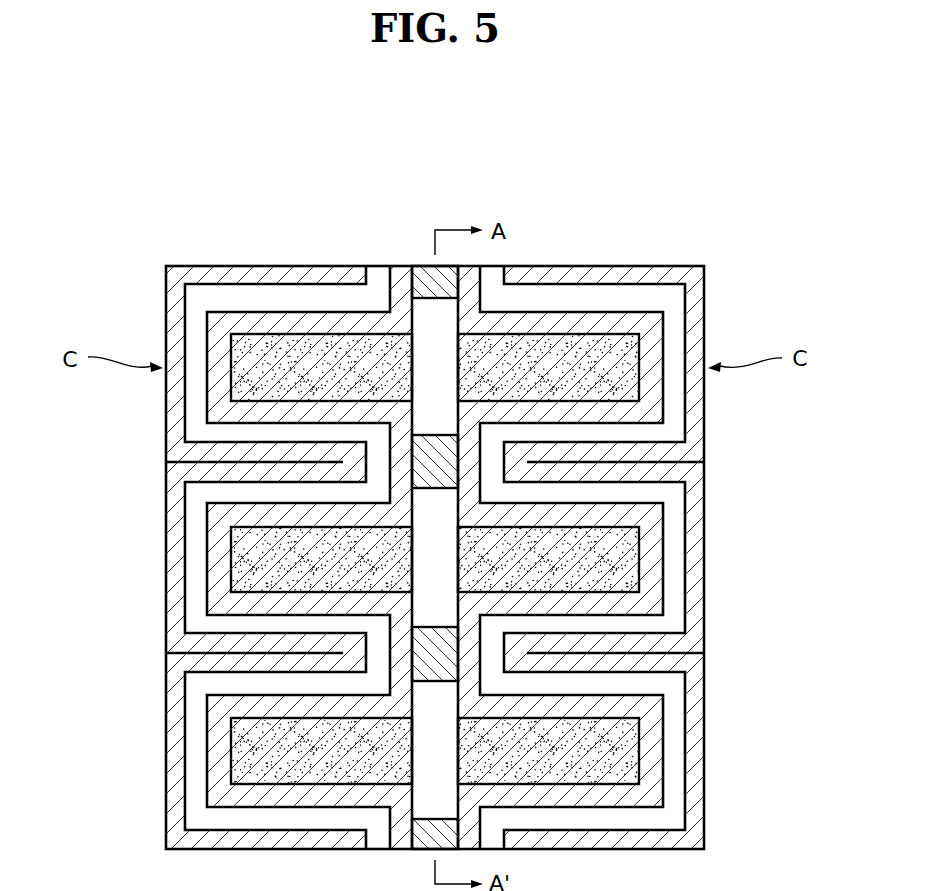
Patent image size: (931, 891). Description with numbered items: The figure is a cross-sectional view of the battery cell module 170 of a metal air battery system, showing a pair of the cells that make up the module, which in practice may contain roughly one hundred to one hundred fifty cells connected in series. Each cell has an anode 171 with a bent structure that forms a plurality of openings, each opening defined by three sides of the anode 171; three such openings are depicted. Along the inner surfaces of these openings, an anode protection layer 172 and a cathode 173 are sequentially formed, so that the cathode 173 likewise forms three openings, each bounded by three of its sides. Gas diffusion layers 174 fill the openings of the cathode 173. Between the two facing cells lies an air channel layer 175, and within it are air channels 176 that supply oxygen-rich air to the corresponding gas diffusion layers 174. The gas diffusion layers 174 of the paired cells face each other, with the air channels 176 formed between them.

The battery cell module 170 is at (190, 198).
The anode 171 is at (695, 307).
The anode protection layer 172 is at (672, 300).
The cathode 173 is at (618, 323).
The gas diffusion layer 174 is at (552, 362).
The air channel layer 175 is at (425, 258).
The air channel 176 is at (432, 372).